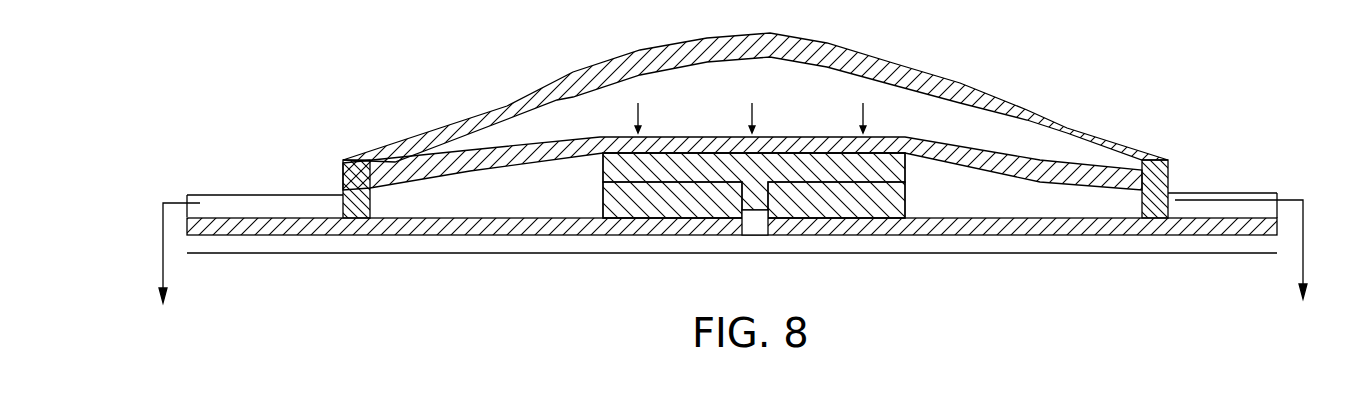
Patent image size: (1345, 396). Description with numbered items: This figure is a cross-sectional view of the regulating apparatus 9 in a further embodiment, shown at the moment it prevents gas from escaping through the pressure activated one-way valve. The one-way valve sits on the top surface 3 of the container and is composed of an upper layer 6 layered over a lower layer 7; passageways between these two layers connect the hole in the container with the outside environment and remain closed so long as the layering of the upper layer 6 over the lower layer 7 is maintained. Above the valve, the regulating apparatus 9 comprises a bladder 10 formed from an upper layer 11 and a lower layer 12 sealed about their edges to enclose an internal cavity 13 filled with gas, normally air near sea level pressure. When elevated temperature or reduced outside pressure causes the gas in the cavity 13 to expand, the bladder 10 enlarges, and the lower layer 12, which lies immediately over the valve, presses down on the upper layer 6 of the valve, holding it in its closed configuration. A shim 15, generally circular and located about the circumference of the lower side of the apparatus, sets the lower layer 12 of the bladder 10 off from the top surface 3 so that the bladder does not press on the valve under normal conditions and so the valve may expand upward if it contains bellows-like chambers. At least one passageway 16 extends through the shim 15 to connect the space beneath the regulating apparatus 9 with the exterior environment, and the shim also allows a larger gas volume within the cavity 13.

The top surface 3 is at (760, 222).
The upper layer 6 is at (603, 182).
The lower layer 7 is at (622, 205).
The regulating apparatus 9 is at (736, 279).
The bladder 10 is at (956, 68).
The upper layer 11 is at (498, 104).
The lower layer 12 is at (437, 175).
The internal cavity 13 is at (767, 90).
The shim 15 is at (373, 219).
The passageway 16 is at (1158, 218).